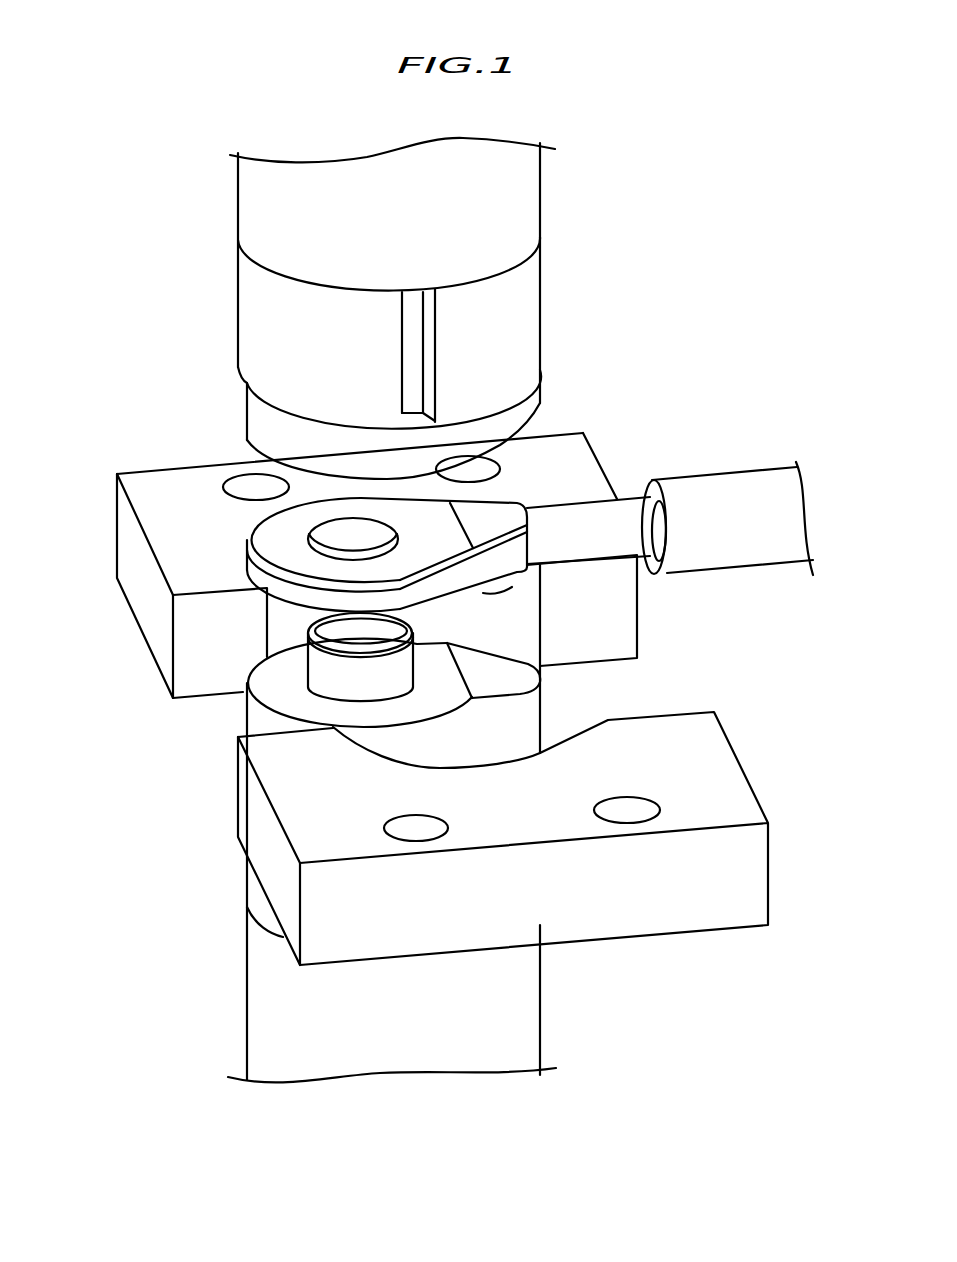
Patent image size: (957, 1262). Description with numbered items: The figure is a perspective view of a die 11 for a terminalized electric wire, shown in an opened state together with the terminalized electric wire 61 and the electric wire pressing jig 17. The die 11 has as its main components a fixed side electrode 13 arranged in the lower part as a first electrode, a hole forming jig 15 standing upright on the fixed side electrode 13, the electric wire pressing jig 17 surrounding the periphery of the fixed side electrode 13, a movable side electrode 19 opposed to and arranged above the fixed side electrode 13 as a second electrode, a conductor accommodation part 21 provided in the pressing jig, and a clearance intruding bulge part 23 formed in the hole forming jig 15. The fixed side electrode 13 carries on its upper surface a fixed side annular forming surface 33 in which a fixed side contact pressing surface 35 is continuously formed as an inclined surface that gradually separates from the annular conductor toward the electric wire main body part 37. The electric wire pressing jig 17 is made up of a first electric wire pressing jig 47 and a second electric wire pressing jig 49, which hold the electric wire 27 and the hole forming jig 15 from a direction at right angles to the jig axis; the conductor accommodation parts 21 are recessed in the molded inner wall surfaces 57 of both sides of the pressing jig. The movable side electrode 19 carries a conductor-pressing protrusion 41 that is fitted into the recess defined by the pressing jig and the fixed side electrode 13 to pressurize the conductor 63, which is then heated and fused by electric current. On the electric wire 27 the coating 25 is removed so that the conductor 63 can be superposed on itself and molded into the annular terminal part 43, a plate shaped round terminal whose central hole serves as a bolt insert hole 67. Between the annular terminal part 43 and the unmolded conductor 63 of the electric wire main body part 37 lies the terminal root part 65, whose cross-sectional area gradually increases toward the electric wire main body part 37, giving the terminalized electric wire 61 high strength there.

The die for a terminalized electric wire 11 is at (156, 283).
The fixed side electrode 13 is at (241, 998).
The hole forming jig 15 is at (390, 665).
The electric wire pressing jig 17 is at (155, 841).
The movable side electrode 19 is at (229, 201).
The conductor accommodation part 21 is at (517, 602).
The clearance intruding bulge part 23 is at (405, 622).
The coating 25 is at (643, 487).
The electric wire 27 is at (770, 463).
The fixed side annular forming surface 33 is at (272, 680).
The fixed side contact pressing surface 35 is at (517, 655).
The electric wire main body part 37 is at (733, 472).
The conductor-pressing protrusion 41 is at (247, 420).
The annular terminal part 43 is at (275, 535).
The first electric wire pressing jig 47 is at (150, 623).
The second electric wire pressing jig 49 is at (252, 810).
The molded inner wall surface 57 is at (487, 592).
The terminalized electric wire 61 is at (817, 491).
The conductor 63 is at (620, 548).
The terminal root part 65 is at (490, 520).
The bolt insert hole 67 is at (349, 533).